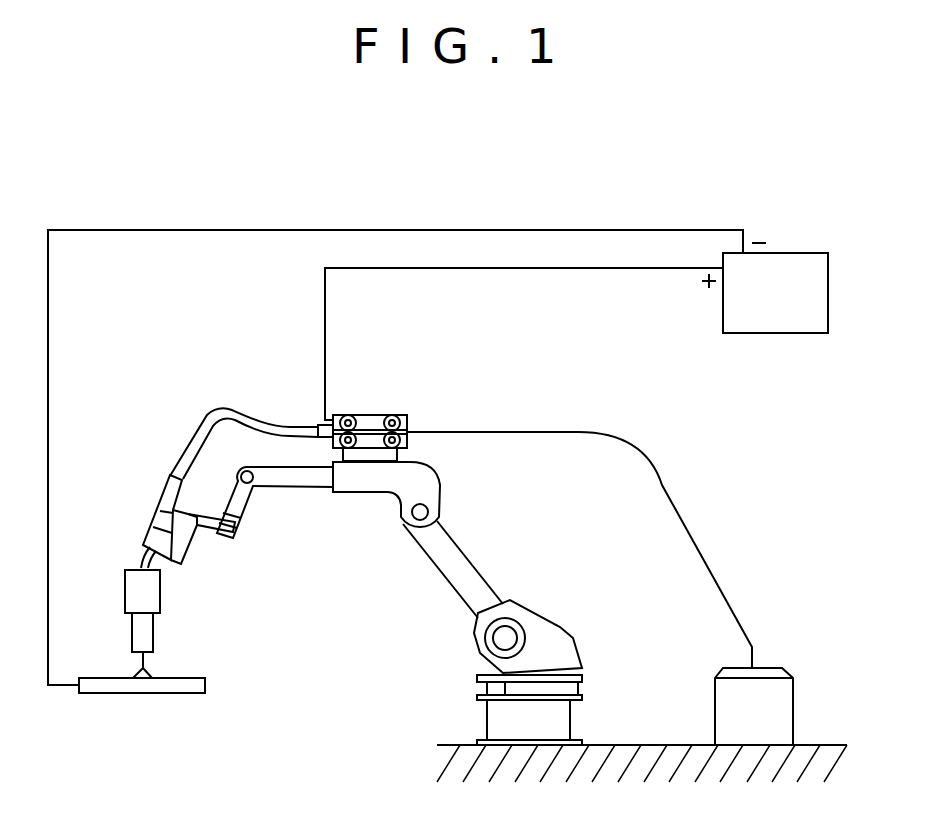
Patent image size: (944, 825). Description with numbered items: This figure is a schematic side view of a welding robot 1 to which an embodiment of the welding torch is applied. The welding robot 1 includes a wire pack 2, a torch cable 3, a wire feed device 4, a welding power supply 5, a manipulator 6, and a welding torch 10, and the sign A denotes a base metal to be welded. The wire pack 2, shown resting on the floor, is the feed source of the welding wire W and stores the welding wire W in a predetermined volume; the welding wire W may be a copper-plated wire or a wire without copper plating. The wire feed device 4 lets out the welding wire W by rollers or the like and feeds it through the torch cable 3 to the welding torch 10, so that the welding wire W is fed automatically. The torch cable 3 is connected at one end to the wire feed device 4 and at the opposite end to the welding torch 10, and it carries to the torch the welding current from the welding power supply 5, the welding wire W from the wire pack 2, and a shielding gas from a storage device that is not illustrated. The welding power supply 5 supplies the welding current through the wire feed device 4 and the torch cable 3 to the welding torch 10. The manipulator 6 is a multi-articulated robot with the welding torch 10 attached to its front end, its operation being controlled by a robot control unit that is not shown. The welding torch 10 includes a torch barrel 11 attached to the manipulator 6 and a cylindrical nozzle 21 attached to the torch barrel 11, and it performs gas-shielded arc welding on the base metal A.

The welding robot 1 is at (577, 186).
The wire pack 2 is at (793, 700).
The torch cable 3 is at (227, 408).
The wire feed device 4 is at (372, 415).
The welding power supply 5 is at (805, 252).
The manipulator 6 is at (447, 575).
The welding torch 10 is at (162, 592).
The torch barrel 11 is at (130, 592).
The nozzle 21 is at (138, 635).
The welding wire W is at (641, 453).
The base metal A is at (172, 695).